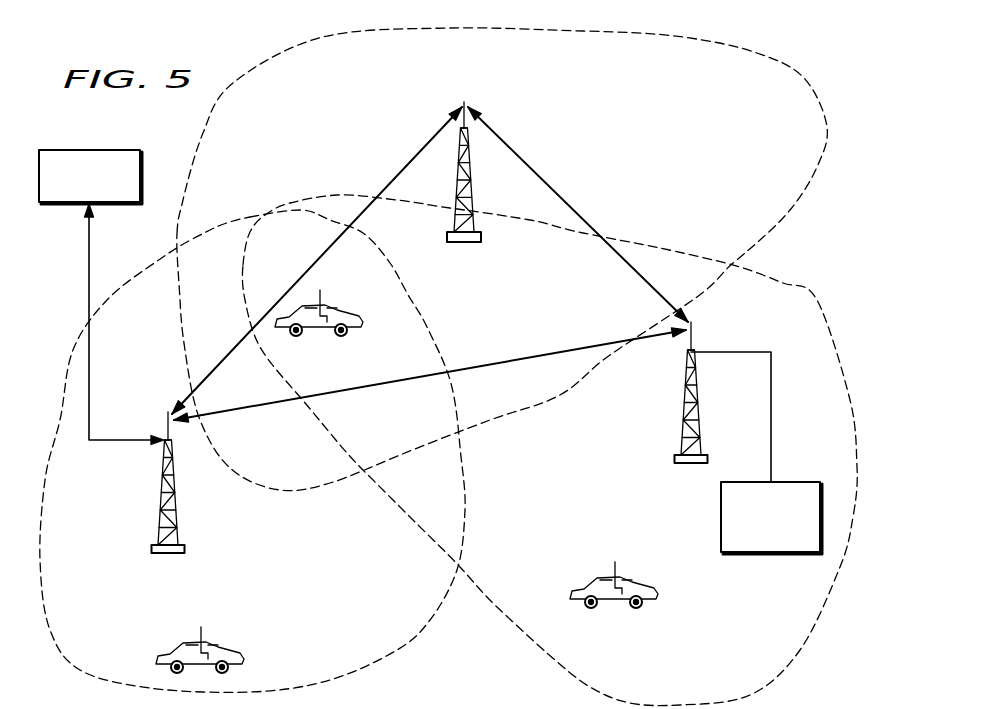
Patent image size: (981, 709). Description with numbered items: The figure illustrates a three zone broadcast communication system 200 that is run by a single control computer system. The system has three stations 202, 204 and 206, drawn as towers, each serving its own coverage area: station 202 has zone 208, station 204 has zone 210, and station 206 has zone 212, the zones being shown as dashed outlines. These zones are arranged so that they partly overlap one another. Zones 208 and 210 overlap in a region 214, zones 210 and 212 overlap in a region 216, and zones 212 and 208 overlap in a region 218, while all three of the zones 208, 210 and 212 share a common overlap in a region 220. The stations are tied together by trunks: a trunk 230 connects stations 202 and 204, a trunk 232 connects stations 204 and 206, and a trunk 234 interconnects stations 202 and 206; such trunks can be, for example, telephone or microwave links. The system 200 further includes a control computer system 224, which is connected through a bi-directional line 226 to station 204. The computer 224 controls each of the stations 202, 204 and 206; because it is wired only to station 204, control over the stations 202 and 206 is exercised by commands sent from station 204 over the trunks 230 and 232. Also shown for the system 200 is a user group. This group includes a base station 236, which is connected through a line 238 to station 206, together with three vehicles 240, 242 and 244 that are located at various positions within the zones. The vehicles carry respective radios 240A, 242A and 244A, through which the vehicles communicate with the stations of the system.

The broadcast communication system 200 is at (549, 25).
The station 202 is at (478, 172).
The station 204 is at (680, 378).
The station 206 is at (161, 477).
The zone 208 is at (674, 38).
The zone 210 is at (795, 287).
The zone 212 is at (395, 655).
The region 214 is at (688, 287).
The region 216 is at (443, 496).
The region 218 is at (230, 266).
The region 220 is at (304, 257).
The control computer system 224 is at (760, 556).
The bi-directional line 226 is at (772, 400).
The trunk 230 is at (520, 161).
The trunk 232 is at (488, 361).
The trunk 234 is at (392, 187).
The base station 236 is at (81, 150).
The line 238 is at (87, 252).
The vehicle 240 is at (314, 334).
The radio 240A is at (346, 313).
The vehicle 242 is at (590, 582).
The radio 242A is at (642, 583).
The vehicle 244 is at (160, 655).
The radio 244A is at (229, 646).